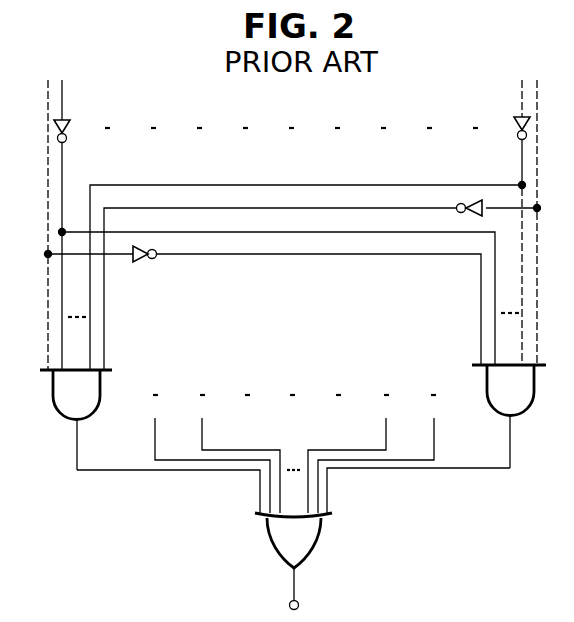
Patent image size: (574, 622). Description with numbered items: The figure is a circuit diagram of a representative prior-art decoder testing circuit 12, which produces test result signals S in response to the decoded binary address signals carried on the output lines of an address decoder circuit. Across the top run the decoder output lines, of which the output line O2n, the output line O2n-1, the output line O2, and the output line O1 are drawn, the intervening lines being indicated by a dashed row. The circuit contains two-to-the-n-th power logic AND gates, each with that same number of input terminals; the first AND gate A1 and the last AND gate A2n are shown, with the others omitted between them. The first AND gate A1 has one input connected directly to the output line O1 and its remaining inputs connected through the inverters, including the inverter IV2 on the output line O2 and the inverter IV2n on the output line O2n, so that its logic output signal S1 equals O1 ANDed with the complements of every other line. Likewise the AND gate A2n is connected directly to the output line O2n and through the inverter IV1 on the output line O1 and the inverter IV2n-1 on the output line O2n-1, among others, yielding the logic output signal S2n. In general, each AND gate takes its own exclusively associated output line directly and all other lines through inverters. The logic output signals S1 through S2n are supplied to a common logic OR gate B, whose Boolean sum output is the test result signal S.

The decoder testing circuit 12 is at (314, 320).
The output line O2n is at (42, 214).
The output line O2n-1 is at (88, 214).
The output line O2 is at (518, 210).
The output line O1 is at (548, 210).
The inverter IV2n-1 is at (70, 124).
The inverter IV2 is at (514, 116).
The inverter IV1 is at (470, 200).
The inverter IV2n is at (148, 262).
The AND gate A2n is at (70, 420).
The first AND gate A1 is at (509, 416).
The logic output signal S2n is at (168, 491).
The logic output signal S1 is at (418, 490).
The logic OR gate B is at (300, 540).
The test result signal S is at (284, 592).